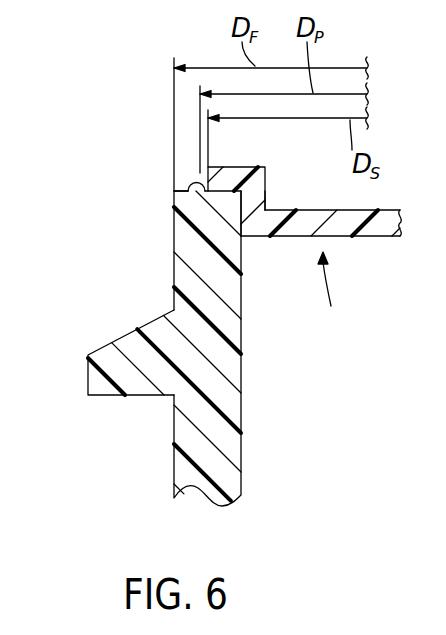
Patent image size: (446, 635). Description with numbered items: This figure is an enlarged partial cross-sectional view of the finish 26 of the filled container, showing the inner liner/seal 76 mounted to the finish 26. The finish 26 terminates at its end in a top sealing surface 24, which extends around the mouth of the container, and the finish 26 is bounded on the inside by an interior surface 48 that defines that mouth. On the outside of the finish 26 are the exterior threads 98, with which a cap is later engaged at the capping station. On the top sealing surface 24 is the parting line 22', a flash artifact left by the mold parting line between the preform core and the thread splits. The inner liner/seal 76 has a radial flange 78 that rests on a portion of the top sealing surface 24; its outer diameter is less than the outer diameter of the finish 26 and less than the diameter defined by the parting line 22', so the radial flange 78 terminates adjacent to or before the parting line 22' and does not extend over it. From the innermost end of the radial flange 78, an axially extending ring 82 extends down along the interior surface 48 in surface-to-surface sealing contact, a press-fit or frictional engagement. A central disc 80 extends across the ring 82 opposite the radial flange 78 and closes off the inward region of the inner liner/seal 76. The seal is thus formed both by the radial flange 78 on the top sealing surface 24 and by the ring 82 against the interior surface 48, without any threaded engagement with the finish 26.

The parting line 22' is at (154, 158).
The top sealing surface 24 is at (180, 186).
The finish 26 is at (173, 233).
The interior surface 48 is at (242, 219).
The inner liner/seal 76 is at (332, 292).
The radial flange 78 is at (228, 176).
The central disc 80 is at (375, 228).
The axially extending ring 82 is at (253, 191).
The exterior threads 98 is at (120, 371).